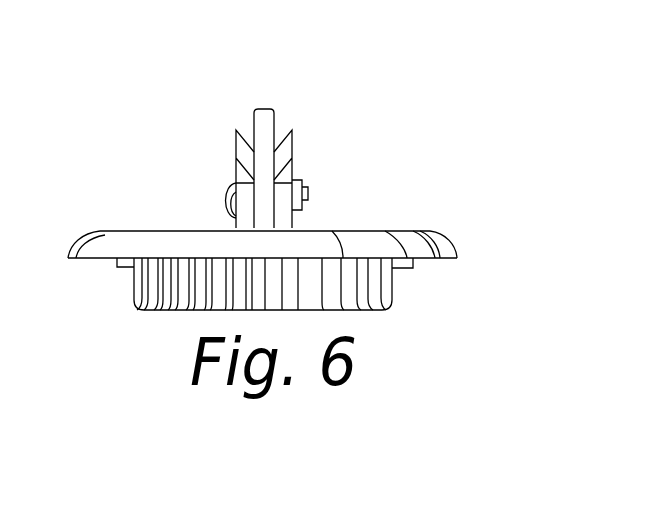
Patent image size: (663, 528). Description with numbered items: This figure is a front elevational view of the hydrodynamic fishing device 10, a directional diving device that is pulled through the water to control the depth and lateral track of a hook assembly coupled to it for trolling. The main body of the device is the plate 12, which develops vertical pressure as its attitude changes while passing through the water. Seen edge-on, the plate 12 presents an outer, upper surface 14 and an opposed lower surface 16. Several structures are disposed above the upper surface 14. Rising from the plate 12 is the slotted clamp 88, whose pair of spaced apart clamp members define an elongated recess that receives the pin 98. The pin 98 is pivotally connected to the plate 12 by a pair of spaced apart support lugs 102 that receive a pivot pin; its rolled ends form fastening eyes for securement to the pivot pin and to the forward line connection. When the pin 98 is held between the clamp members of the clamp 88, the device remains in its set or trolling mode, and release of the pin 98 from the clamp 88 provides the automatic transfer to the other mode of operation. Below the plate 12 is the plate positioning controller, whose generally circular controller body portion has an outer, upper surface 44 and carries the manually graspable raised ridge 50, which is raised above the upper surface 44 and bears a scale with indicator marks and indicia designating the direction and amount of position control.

The hydrodynamic fishing device 10 is at (307, 199).
The plate 12 is at (113, 230).
The upper surface 14 is at (427, 230).
The lower surface 16 is at (435, 258).
The upper surface 44 is at (323, 301).
The raised ridge 50 is at (367, 312).
The slotted clamp 88 is at (248, 147).
The pin 98 is at (278, 112).
The support lugs 102 is at (283, 217).